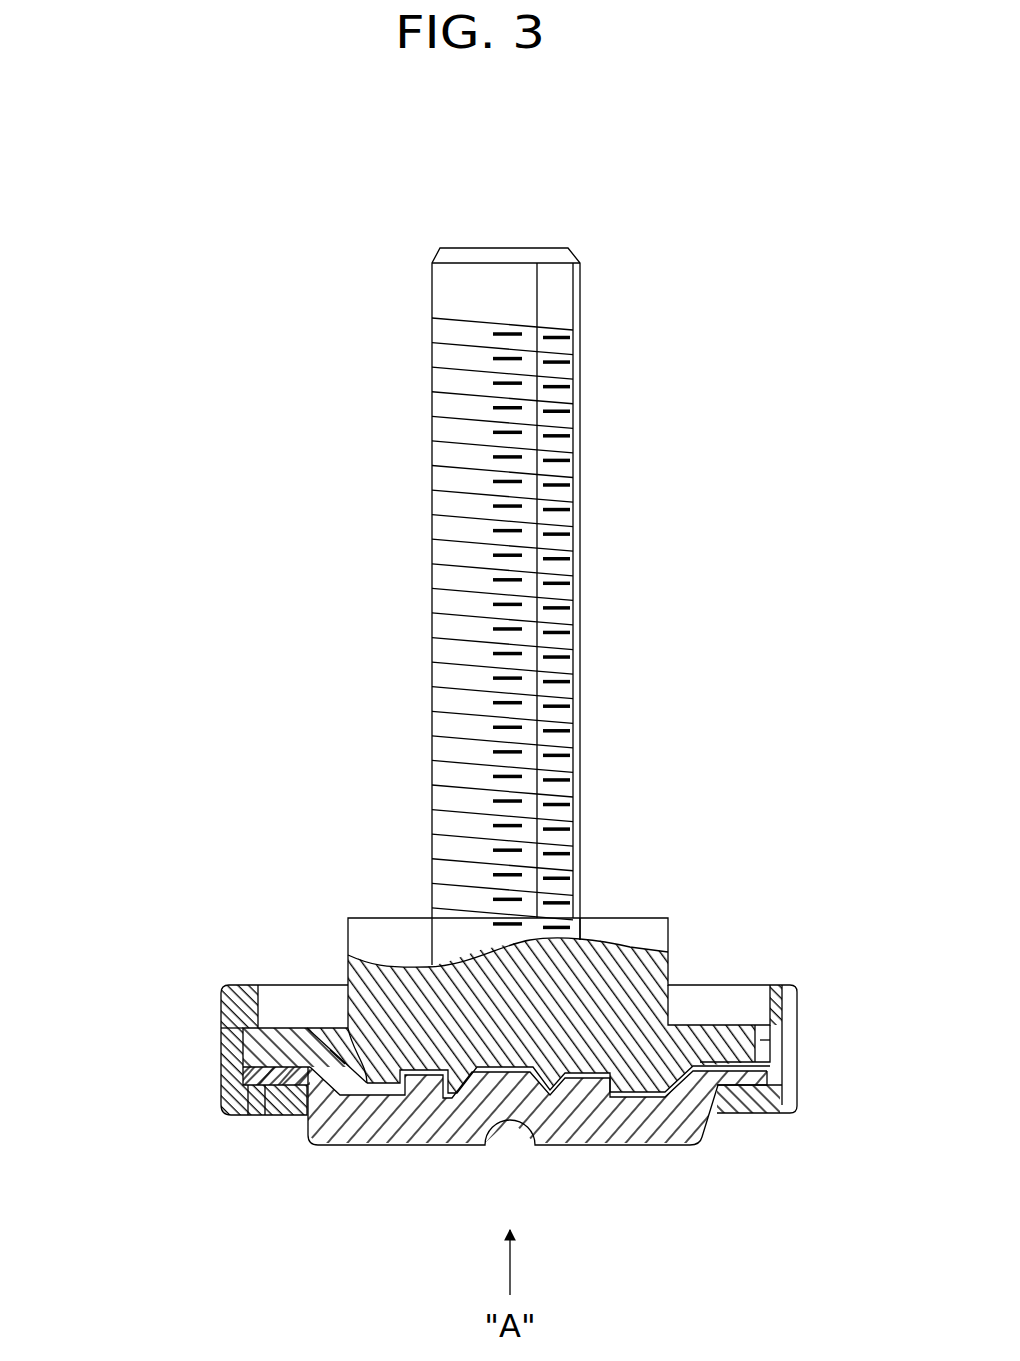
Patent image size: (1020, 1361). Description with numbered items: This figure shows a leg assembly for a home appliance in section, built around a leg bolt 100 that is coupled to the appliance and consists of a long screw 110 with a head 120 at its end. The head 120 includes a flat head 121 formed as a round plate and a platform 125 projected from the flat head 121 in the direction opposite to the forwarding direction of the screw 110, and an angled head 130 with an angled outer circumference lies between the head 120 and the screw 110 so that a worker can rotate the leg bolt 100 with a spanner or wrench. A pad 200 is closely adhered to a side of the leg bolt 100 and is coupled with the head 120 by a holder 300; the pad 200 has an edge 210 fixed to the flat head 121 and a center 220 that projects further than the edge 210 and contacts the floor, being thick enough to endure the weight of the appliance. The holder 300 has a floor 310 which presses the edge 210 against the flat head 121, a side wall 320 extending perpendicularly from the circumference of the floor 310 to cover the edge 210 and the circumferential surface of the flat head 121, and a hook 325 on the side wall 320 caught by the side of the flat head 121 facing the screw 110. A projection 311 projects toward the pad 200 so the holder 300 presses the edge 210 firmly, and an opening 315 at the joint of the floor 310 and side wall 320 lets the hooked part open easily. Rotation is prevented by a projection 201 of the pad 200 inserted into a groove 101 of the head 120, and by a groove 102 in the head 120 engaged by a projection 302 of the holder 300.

The leg bolt 100 is at (552, 971).
The groove 101 is at (605, 1065).
The groove 102 is at (758, 1025).
The screw 110 is at (445, 525).
The head 120 is at (277, 897).
The flat head 121 is at (307, 1028).
The platform 125 is at (355, 975).
The angled head 130 is at (392, 930).
The pad 200 is at (431, 1176).
The projection 201 is at (403, 1100).
The edge 210 is at (243, 1074).
The center 220 is at (455, 1130).
The holder 300 is at (467, 1057).
The projection 302 is at (770, 1043).
The floor 310 is at (283, 1118).
The projection 311 is at (722, 1110).
The opening 315 is at (256, 1112).
The side wall 320 is at (221, 1043).
The hook 325 is at (256, 1005).